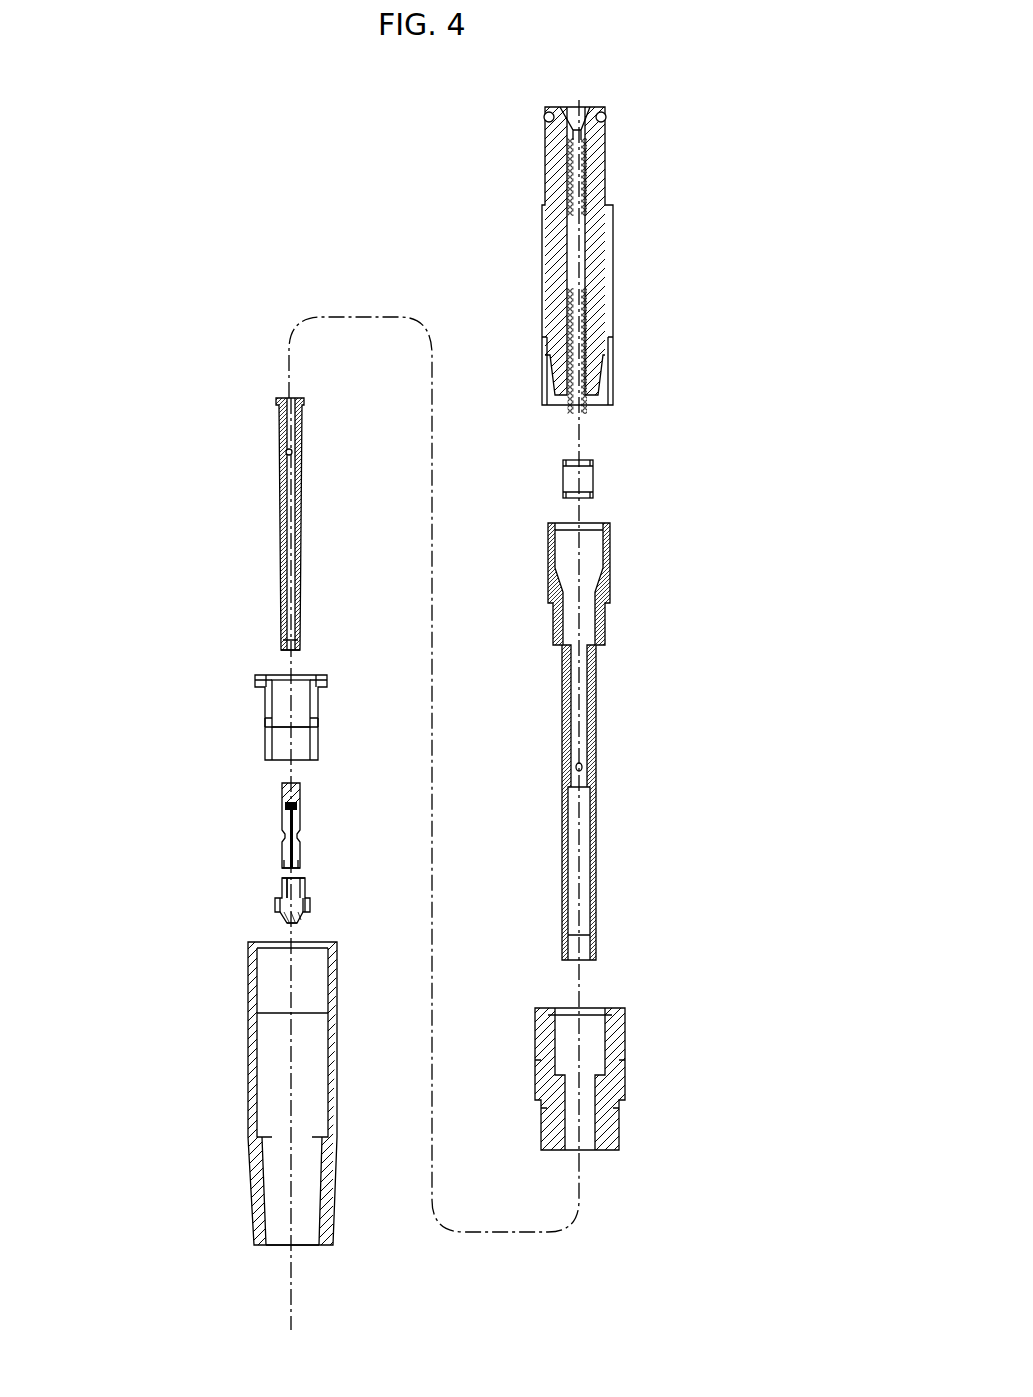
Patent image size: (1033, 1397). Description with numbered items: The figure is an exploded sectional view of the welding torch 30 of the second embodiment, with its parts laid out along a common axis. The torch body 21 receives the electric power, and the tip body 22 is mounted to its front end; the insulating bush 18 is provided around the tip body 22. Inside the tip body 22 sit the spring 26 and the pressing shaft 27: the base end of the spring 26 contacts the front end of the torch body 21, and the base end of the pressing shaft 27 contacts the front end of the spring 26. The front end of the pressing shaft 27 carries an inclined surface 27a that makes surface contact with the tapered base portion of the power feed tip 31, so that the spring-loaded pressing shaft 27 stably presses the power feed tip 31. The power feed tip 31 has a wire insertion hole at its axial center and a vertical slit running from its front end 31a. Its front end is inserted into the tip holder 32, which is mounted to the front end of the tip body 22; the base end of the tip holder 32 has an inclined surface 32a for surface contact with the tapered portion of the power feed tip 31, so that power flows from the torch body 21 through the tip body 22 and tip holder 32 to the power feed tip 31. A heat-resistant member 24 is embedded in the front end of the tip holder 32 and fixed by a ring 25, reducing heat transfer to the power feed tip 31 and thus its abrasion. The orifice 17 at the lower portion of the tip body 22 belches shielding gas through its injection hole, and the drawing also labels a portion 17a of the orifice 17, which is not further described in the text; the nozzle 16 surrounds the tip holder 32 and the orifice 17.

The nozzle 16 is at (250, 1072).
The orifice 17 is at (255, 678).
The engaging portion of holder 17a is at (265, 723).
The insulating bush 18 is at (620, 1038).
The torch body 21 is at (597, 237).
The tip body 22 is at (600, 665).
The heat-resistant member 24 is at (300, 917).
The ring 25 is at (303, 905).
The spring 26 is at (594, 462).
The pressing shaft 27 is at (282, 550).
The inclined surface 27a is at (285, 652).
The welding torch 30 is at (215, 253).
The power feed tip 31 is at (285, 805).
The front end 31a is at (282, 865).
The tip holder 32 is at (275, 905).
The inclined surface 32a is at (283, 880).